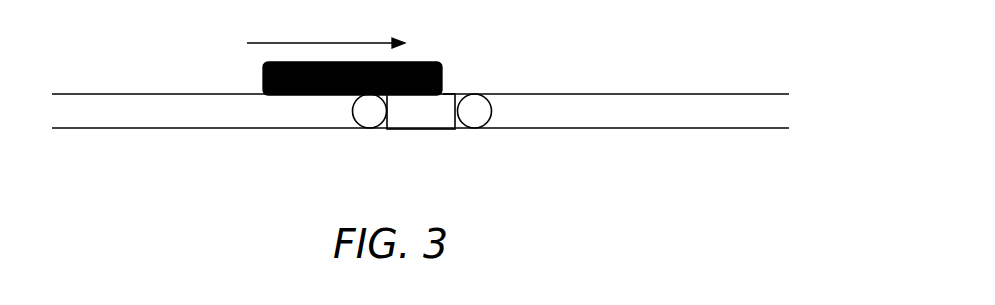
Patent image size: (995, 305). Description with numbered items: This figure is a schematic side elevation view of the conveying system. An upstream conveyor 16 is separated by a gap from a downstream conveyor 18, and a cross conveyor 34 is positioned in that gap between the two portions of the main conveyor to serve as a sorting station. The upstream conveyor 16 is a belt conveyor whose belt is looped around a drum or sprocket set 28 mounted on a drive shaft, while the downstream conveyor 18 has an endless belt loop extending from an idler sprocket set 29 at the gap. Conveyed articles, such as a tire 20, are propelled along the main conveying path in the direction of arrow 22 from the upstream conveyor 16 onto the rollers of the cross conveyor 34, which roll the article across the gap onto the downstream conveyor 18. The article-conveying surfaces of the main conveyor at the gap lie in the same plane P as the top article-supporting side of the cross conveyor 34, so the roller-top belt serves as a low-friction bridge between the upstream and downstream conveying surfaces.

The upstream conveyor 16 is at (105, 94).
The downstream conveyor 18 is at (710, 94).
The tire 20 is at (421, 62).
The arrow 22 is at (330, 43).
The sprocket set 28 is at (372, 123).
The idler sprocket set 29 is at (472, 123).
The cross conveyor 34 is at (422, 122).
The plane P is at (461, 94).